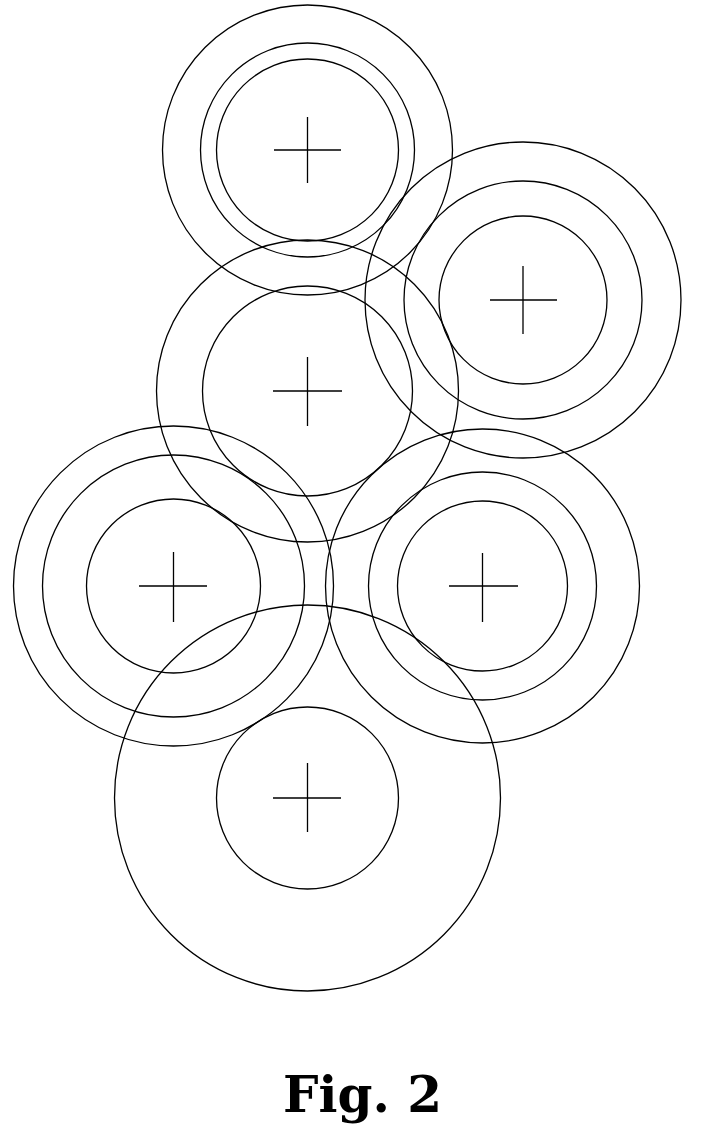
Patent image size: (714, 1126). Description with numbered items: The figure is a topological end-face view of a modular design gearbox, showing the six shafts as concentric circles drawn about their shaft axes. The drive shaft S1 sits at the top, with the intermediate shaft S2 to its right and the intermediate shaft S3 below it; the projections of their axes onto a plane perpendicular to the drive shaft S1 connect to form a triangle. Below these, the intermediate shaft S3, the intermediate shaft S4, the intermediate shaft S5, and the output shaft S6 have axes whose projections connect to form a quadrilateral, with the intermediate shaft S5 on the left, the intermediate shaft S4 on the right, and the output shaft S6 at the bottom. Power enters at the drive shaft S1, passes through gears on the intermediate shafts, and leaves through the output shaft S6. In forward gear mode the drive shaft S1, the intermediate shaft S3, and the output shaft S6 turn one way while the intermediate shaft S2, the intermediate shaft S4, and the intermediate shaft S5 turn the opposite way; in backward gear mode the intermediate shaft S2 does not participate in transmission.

The drive shaft S1 is at (308, 150).
The intermediate shaft S2 is at (523, 300).
The intermediate shaft S3 is at (308, 391).
The intermediate shaft S4 is at (483, 586).
The intermediate shaft S5 is at (174, 586).
The output shaft S6 is at (308, 798).